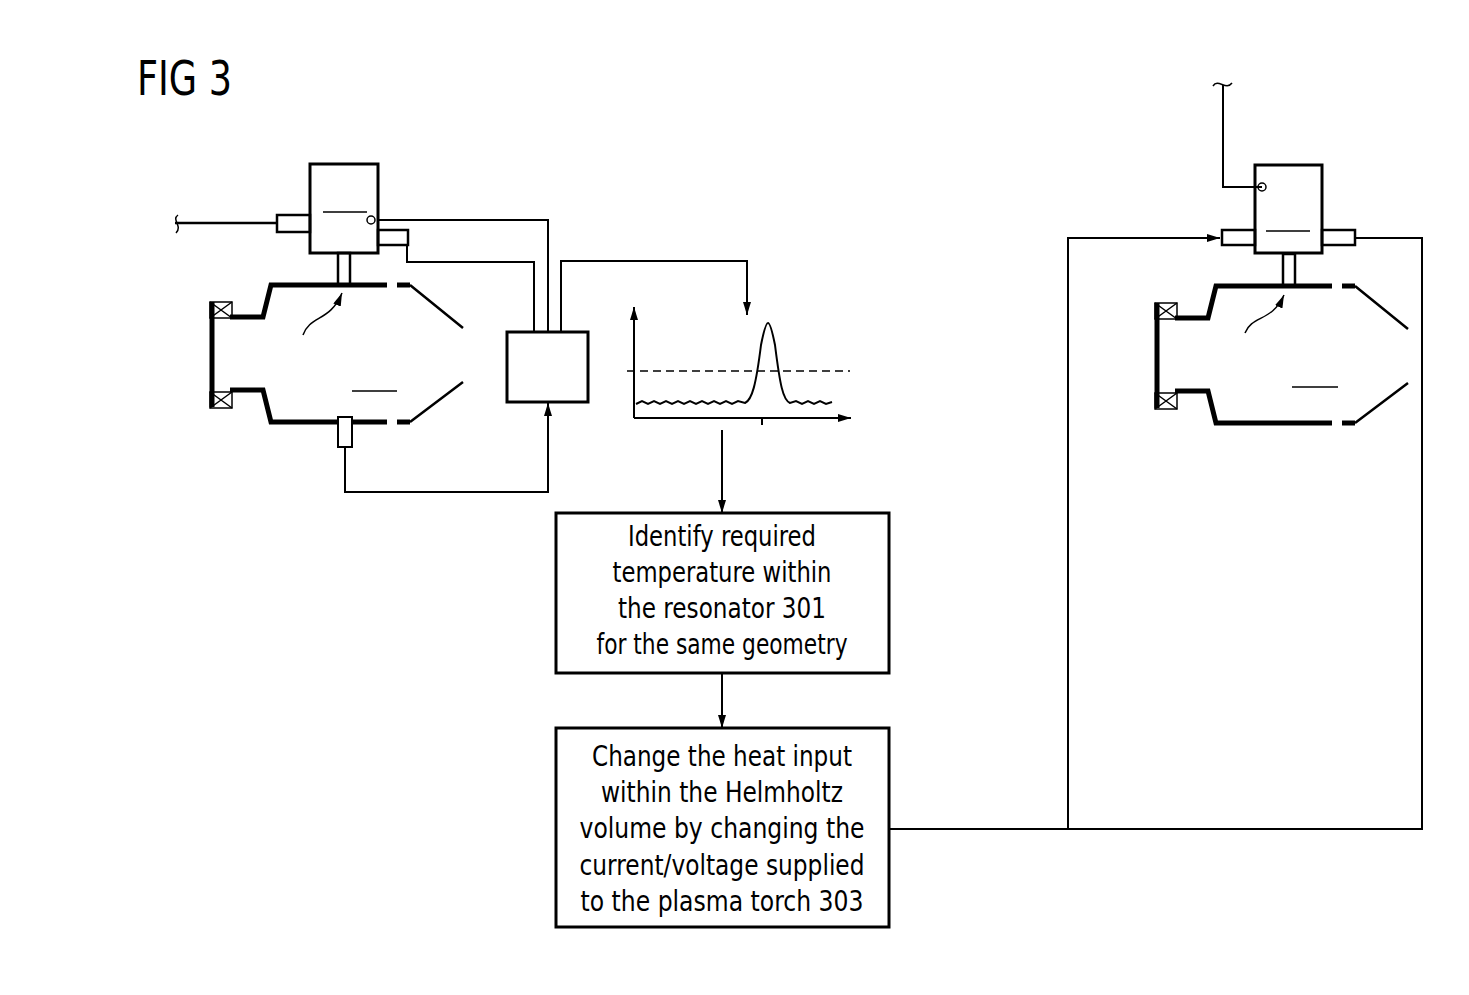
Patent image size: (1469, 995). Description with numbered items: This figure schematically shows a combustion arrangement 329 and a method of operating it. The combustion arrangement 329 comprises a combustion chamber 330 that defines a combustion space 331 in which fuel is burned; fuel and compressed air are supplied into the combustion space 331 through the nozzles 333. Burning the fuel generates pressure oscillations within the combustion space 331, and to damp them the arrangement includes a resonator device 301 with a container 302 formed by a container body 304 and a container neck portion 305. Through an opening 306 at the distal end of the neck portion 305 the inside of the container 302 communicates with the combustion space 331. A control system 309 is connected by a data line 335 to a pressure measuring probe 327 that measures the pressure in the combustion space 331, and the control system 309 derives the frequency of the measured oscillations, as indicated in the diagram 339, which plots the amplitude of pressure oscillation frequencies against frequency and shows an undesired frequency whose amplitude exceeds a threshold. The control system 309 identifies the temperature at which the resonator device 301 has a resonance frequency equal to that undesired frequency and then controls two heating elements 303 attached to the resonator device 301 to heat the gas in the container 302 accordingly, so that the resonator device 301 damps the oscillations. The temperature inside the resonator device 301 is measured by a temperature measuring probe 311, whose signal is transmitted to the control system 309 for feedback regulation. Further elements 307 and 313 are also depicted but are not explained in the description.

The resonator device 301 is at (413, 135).
The container 302 is at (343, 163).
The heating elements 303 is at (293, 222).
The container body 304 is at (816, 206).
The container neck portion 305 is at (337, 278).
The opening 306 is at (782, 334).
The supply line 307 is at (213, 222).
The control system 309 is at (525, 403).
The temperature measuring probe 311 is at (375, 216).
The signal line 313 is at (512, 219).
The pressure measuring probe 327 is at (352, 440).
The combustion arrangement 329 is at (570, 213).
The combustion chamber 330 is at (312, 427).
The combustion space 331 is at (845, 374).
The nozzles 333 is at (210, 397).
The data line 335 is at (452, 495).
The diagram 339 is at (823, 337).